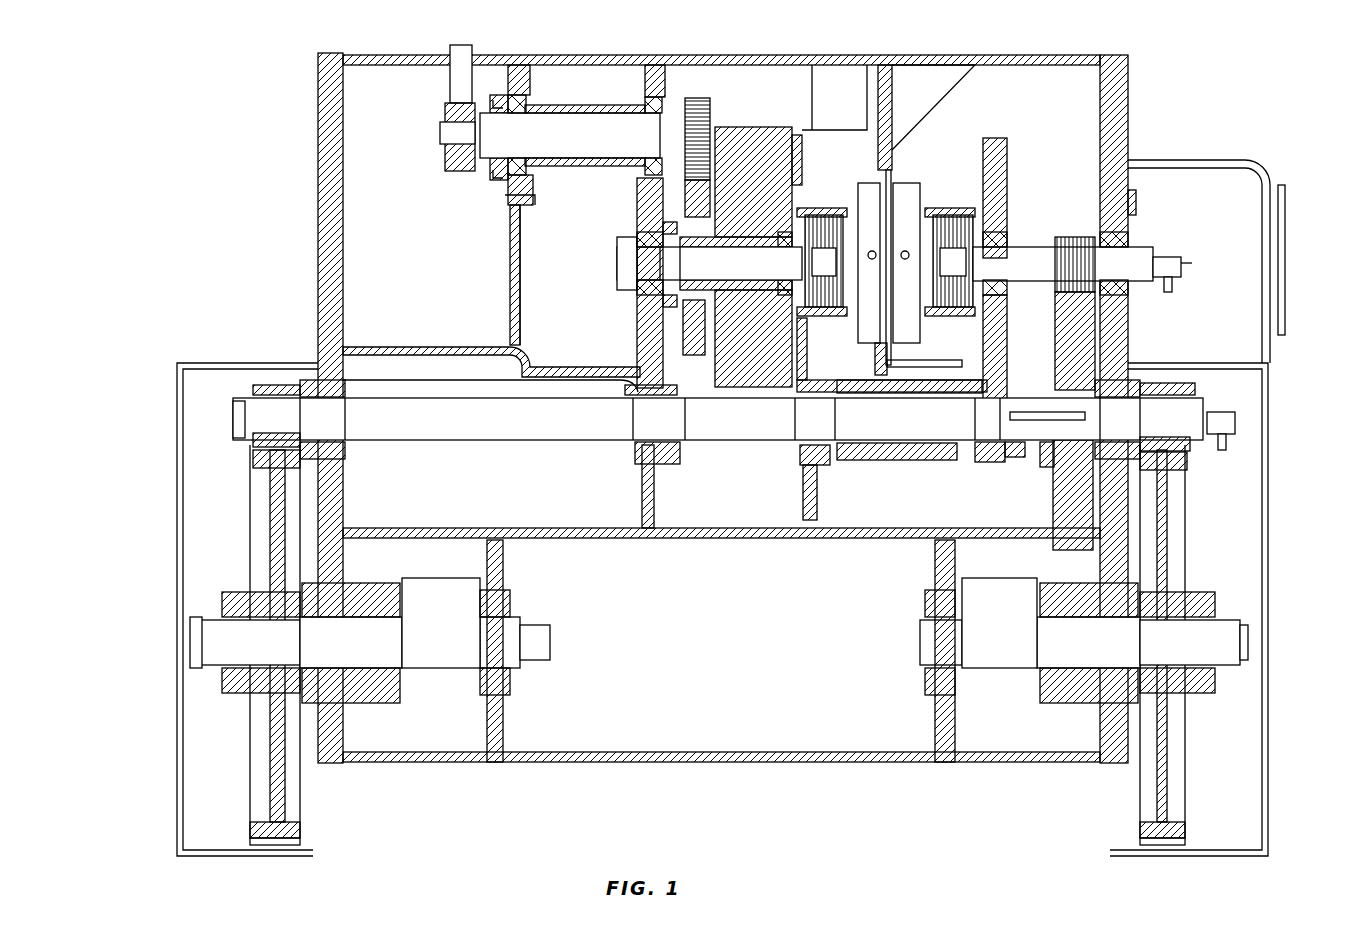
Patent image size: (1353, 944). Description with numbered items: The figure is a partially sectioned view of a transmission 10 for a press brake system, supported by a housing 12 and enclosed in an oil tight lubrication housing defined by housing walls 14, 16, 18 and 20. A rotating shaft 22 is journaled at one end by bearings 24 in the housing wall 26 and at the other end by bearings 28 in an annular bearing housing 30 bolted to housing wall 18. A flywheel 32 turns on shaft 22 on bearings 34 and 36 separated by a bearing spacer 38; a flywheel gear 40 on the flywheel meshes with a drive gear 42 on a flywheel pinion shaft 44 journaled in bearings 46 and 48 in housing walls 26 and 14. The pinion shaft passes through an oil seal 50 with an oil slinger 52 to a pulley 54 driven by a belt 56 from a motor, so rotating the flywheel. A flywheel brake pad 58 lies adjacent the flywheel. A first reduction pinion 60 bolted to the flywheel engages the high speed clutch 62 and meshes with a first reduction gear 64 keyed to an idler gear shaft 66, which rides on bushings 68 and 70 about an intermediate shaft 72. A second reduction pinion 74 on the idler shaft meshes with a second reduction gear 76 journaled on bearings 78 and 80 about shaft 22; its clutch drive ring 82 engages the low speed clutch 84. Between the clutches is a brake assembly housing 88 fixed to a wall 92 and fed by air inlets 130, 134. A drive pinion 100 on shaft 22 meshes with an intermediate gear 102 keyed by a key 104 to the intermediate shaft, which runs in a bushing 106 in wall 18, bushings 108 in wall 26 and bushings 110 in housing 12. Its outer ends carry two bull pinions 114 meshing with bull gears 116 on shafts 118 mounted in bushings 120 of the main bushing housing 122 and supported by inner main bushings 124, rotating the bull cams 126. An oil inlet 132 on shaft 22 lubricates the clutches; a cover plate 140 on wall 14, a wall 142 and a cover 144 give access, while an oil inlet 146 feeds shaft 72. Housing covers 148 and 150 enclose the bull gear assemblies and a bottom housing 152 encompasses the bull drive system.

The transmission 10 is at (235, 205).
The housing 12 is at (318, 100).
The housing wall 14 is at (518, 348).
The housing wall 16 is at (775, 538).
The housing wall 18 is at (1120, 120).
The housing wall 20 is at (1010, 60).
The rotating shaft 22 is at (709, 263).
The bearings 24 is at (650, 298).
The housing wall 26 is at (637, 350).
The bearings 28 is at (1132, 238).
The annular bearing housing 30 is at (1135, 200).
The flywheel 32 is at (765, 135).
The bearing 34 is at (668, 225).
The bearing 36 is at (782, 234).
The bearing spacer 38 is at (748, 238).
The flywheel gear 40 is at (695, 340).
The drive gear 42 is at (700, 110).
The flywheel pinion shaft 44 is at (570, 135).
The bearing 46 is at (648, 100).
The bearing 48 is at (525, 102).
The oil seal 50 is at (478, 180).
The oil slinger 52 is at (498, 190).
The sprocket or pulley 54 is at (450, 155).
The belt 56 is at (450, 100).
The flywheel brake pad 58 is at (800, 135).
The first reduction pinion 60 is at (818, 210).
The high speed clutch 62 is at (824, 261).
The first reduction gear 64 is at (807, 362).
The idler gear shaft 66 is at (895, 460).
The bushing 68 is at (820, 445).
The bushing 70 is at (1008, 460).
The intermediate shaft 72 is at (718, 419).
The second reduction pinion 74 is at (975, 465).
The second reduction gear 76 is at (1000, 365).
The bearing 78 is at (995, 235).
The bearing 80 is at (1012, 238).
The clutch drive ring 82 is at (950, 208).
The low speed clutch 84 is at (953, 261).
The brake assembly housing 88 is at (912, 185).
The wall 92 is at (895, 98).
The drive pinion 100 is at (1072, 238).
The intermediate gear 102 is at (1075, 298).
The key 104 is at (1050, 435).
The bushing 106 is at (1140, 385).
The bushings 108 is at (660, 460).
The bushings 110 is at (340, 448).
The bull pinion 114 is at (252, 440).
The bull gear 116 is at (270, 490).
The bull gear shaft 118 is at (719, 642).
The bushing 120 is at (400, 680).
The main bushing housing 122 is at (362, 690).
The inner main bushing 124 is at (510, 672).
The bull cam 126 is at (719, 623).
The air inlet 130 is at (872, 250).
The oil inlet 132 is at (1170, 258).
The air inlet 134 is at (906, 262).
The cover plate 140 is at (510, 280).
The wall 142 is at (1245, 160).
The cover 144 is at (1286, 250).
The oil inlet 146 is at (1242, 420).
The housing cover 148 is at (1270, 580).
The housing cover 150 is at (177, 495).
The bottom housing 152 is at (800, 762).